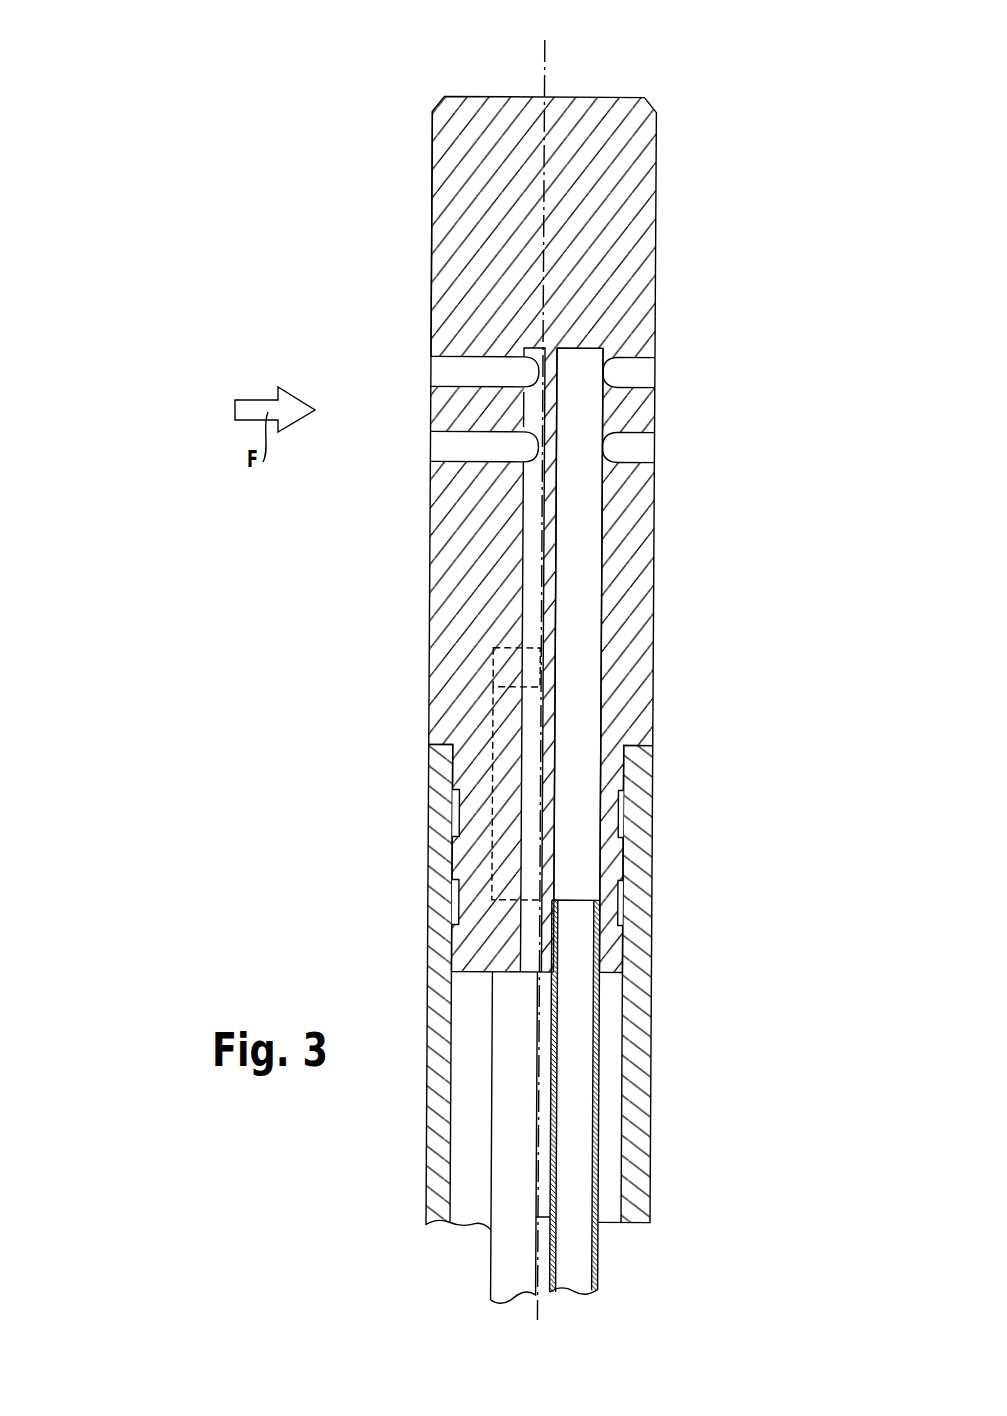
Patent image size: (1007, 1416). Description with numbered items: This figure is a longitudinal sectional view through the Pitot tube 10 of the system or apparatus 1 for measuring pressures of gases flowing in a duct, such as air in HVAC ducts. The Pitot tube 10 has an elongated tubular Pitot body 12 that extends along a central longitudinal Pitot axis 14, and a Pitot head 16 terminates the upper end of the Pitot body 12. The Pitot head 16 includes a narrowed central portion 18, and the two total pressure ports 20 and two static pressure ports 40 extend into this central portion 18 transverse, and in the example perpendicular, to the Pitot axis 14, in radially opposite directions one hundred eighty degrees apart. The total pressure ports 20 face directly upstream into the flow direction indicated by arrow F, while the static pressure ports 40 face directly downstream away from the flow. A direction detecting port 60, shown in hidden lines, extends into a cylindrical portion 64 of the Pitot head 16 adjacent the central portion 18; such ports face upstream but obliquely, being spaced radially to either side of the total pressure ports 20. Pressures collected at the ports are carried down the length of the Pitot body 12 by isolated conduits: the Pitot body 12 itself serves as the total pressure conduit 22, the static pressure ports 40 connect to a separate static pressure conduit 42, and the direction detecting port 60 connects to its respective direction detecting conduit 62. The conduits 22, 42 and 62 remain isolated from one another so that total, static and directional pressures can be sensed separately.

The system or apparatus 1 is at (210, 155).
The Pitot tube 10 is at (376, 137).
The Pitot body 12 is at (440, 1010).
The Pitot axis 14 is at (546, 44).
The Pitot head 16 is at (431, 262).
The narrowed central portion 18 is at (590, 253).
The total pressure port 20 is at (443, 450).
The total pressure conduit 22 is at (530, 608).
The static pressure port 40 is at (635, 448).
The static pressure conduit 42 is at (577, 1070).
The direction detecting port 60 is at (480, 670).
The direction detecting conduit 62 is at (507, 1127).
The cylindrical portion 64 is at (620, 705).